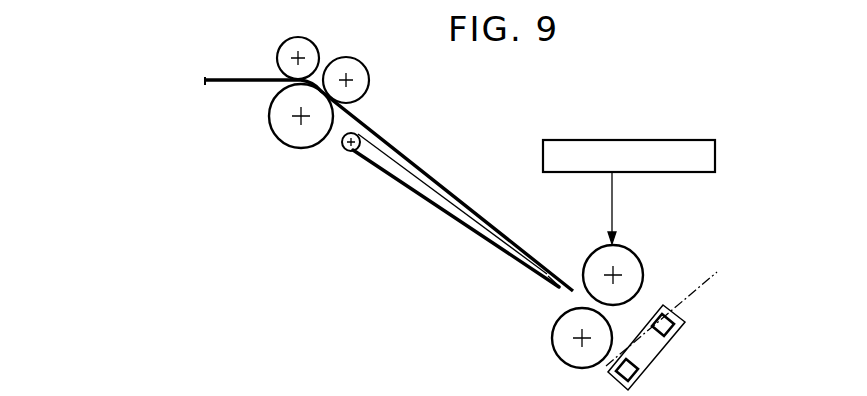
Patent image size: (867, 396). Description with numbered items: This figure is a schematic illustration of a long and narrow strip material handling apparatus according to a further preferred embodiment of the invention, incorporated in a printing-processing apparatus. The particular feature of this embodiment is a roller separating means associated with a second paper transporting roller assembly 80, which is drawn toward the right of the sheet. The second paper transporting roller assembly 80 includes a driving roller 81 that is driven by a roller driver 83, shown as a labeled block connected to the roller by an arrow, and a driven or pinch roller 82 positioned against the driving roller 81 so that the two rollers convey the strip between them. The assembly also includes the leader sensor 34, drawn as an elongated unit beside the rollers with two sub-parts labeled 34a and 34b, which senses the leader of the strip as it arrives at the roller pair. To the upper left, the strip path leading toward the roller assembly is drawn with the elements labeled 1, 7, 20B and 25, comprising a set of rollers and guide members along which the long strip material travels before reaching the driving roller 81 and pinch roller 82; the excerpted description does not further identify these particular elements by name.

The belt 1 is at (437, 181).
The sheet 7 is at (434, 293).
The roller 20B is at (301, 148).
The belt roller 25 is at (425, 202).
The leader sensor 34 is at (682, 306).
The sensor element 34a is at (683, 325).
The sensor element 34b is at (635, 377).
The second paper transporting roller assembly 80 is at (637, 243).
The driving roller 81 is at (555, 318).
The pinch roller 82 is at (592, 254).
The roller driver 83 is at (618, 140).